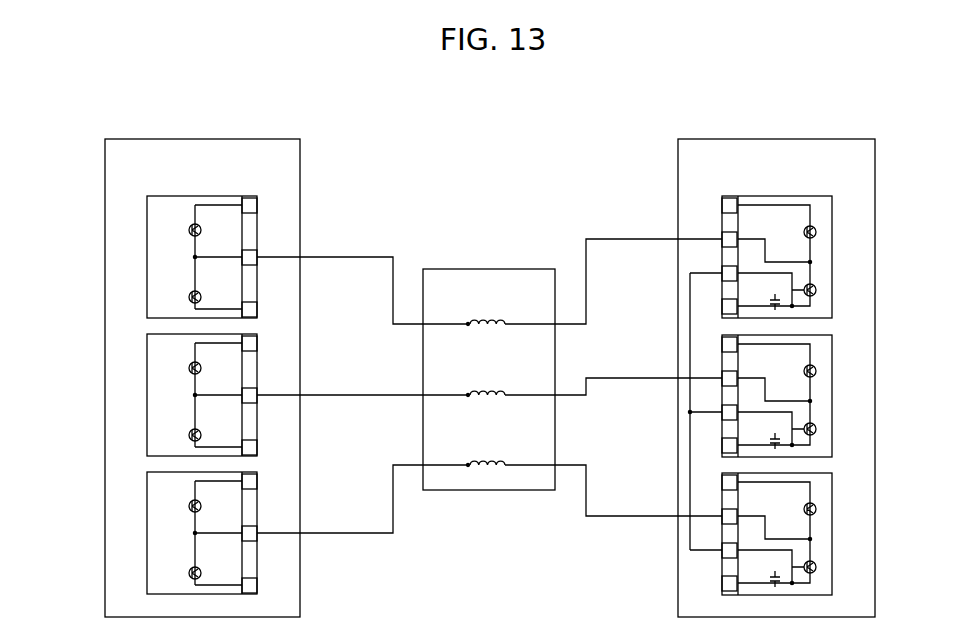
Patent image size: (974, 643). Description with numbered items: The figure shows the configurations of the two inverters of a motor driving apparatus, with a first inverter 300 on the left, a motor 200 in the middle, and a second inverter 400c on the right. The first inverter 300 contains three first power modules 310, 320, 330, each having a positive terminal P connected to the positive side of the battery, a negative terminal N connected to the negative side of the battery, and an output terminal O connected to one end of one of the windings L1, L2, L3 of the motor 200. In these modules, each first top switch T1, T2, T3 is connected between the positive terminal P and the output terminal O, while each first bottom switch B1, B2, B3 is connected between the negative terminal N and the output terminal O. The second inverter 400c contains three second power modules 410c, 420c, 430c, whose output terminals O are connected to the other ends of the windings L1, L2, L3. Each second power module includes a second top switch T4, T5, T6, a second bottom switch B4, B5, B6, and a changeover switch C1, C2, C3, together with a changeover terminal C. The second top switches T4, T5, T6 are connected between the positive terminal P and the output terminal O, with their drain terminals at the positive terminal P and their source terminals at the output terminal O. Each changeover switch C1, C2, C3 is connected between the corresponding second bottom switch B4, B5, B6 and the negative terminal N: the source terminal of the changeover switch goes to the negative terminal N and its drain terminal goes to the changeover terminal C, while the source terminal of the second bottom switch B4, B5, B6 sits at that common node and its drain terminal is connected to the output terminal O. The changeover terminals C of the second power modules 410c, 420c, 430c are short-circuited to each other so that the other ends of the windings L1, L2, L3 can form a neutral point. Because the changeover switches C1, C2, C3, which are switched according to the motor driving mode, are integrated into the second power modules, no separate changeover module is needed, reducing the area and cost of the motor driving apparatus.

The first inverter 300 is at (206, 139).
The first power module 310 is at (160, 257).
The first power module 320 is at (160, 395).
The first power module 330 is at (160, 533).
The motor 200 is at (489, 353).
The second inverter 400c is at (785, 139).
The second power module 410c is at (818, 257).
The second power module 420c is at (818, 396).
The second power module 430c is at (818, 534).
The first top switch T1 is at (179, 230).
The first bottom switch B1 is at (179, 297).
The first top switch T2 is at (179, 368).
The first bottom switch B2 is at (179, 435).
The first top switch T3 is at (179, 506).
The first bottom switch B3 is at (179, 573).
The second top switch T4 is at (803, 232).
The second bottom switch B4 is at (818, 279).
The second top switch T5 is at (803, 371).
The second bottom switch B5 is at (818, 418).
The second top switch T6 is at (803, 509).
The second bottom switch B6 is at (818, 556).
The changeover switch C1 is at (773, 301).
The changeover switch C2 is at (773, 440).
The changeover switch C3 is at (773, 578).
The winding L1 is at (486, 332).
The winding L2 is at (486, 403).
The winding L3 is at (486, 456).